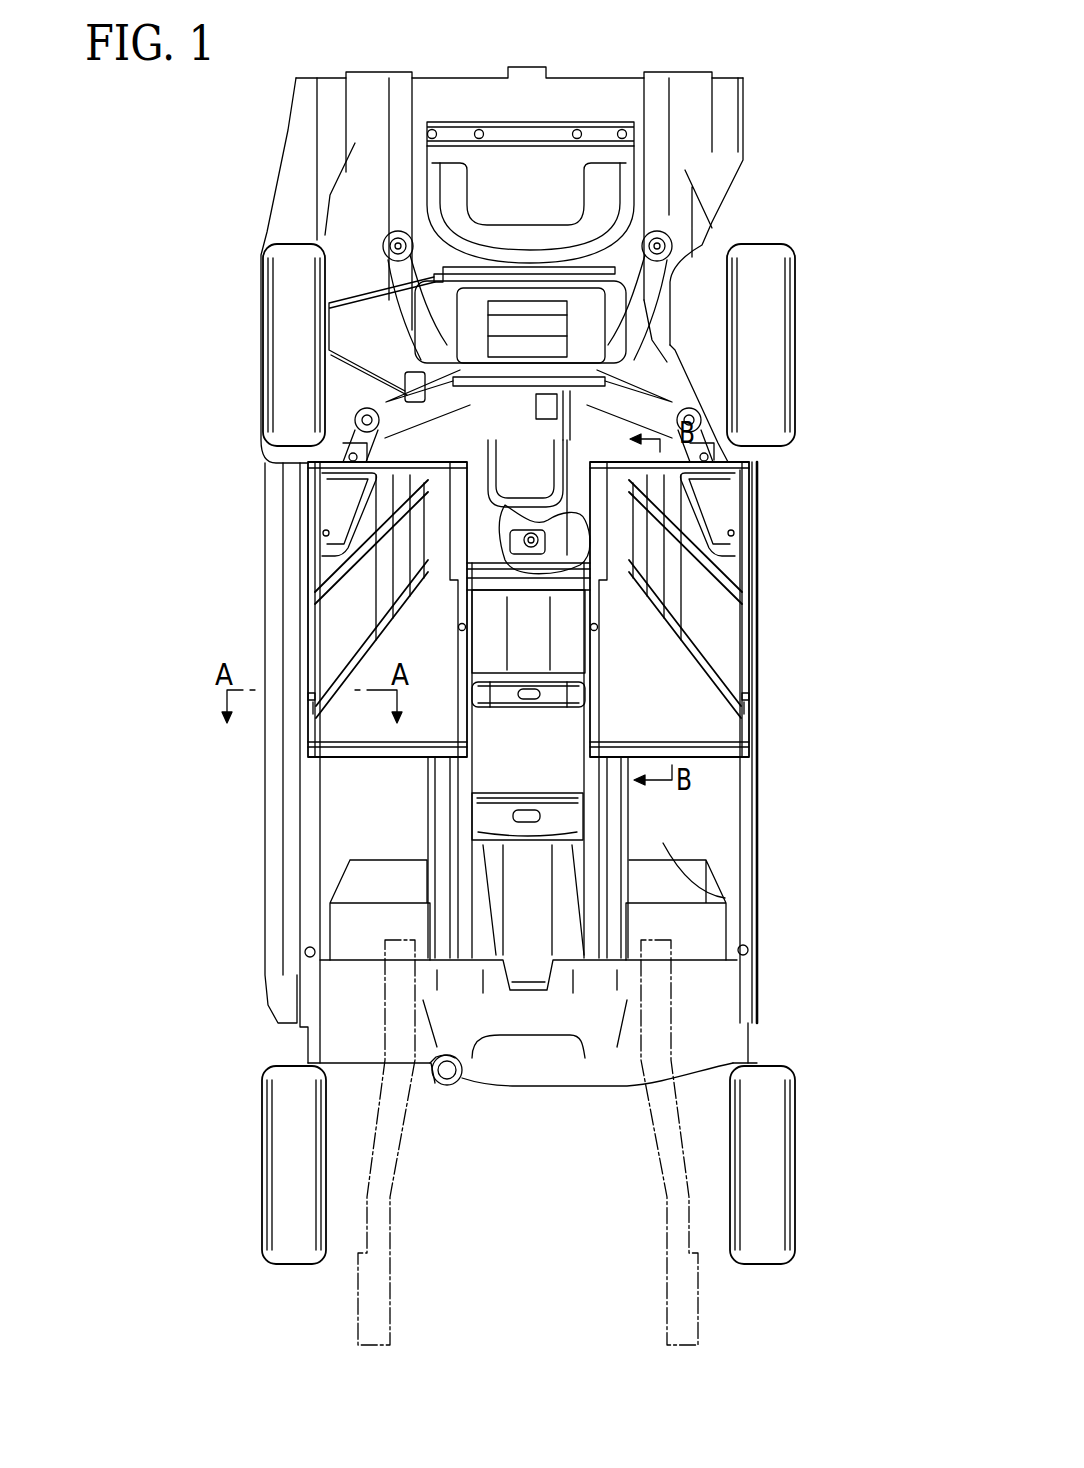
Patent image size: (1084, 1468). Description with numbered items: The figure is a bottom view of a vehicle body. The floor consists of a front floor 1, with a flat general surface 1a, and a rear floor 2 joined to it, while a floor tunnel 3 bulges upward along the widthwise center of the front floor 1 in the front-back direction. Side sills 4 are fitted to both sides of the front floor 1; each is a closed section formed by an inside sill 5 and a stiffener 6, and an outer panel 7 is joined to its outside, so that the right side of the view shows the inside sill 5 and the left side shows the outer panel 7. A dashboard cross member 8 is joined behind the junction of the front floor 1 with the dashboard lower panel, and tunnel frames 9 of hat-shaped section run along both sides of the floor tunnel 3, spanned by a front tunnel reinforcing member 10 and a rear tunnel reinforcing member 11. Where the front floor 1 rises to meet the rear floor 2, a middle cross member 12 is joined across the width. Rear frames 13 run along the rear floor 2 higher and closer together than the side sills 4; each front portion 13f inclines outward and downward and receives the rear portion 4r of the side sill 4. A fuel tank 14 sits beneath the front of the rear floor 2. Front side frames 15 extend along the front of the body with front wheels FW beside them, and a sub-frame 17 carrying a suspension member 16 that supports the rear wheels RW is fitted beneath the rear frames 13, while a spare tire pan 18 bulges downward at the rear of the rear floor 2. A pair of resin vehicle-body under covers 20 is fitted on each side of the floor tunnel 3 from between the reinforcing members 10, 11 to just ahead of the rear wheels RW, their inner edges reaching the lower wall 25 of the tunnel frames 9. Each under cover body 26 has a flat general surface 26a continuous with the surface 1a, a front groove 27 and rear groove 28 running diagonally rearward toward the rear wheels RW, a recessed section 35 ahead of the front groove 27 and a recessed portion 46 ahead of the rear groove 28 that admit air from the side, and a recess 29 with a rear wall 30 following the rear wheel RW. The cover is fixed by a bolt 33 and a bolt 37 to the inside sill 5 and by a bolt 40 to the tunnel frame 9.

The front floor 1 is at (680, 838).
The flat general surface 1a is at (725, 898).
The rear floor 2 is at (596, 210).
The floor tunnel 3 is at (540, 921).
The side sill 4 is at (532, 762).
The rear portion of the side sill 4r is at (710, 440).
The inside sill 5 is at (305, 927).
The stiffener 6 is at (278, 897).
The outer panel 7 is at (265, 860).
The dashboard cross member 8 is at (735, 1043).
The tunnel frame 9 is at (455, 790).
The front tunnel reinforcing member 10 is at (498, 825).
The rear tunnel reinforcing member 11 is at (563, 695).
The middle cross member 12 is at (575, 578).
The rear frame 13 is at (395, 157).
The front portion of the rear frame 13f is at (660, 340).
The fuel tank 14 is at (481, 449).
The front side frame 15 is at (358, 1318).
The suspension member 16 is at (430, 358).
The sub-frame 17 is at (410, 268).
The spare tire pan 18 is at (597, 180).
The vehicle-body under cover 20 is at (350, 727).
The lower wall of the tunnel frame 25 is at (432, 818).
The under cover body 26 is at (377, 667).
The flat general surface 26a is at (458, 732).
The front groove 27 is at (367, 652).
The rear groove 28 is at (360, 565).
The recess 29 is at (317, 502).
The rear wall 30 is at (337, 470).
The bolt 33 is at (323, 532).
The recessed section 35 is at (313, 708).
The bolt 37 is at (307, 697).
The bolt 40 is at (458, 628).
The recessed portion 46 is at (312, 620).
The rear wheel RW is at (263, 322).
The front wheel FW is at (262, 1168).